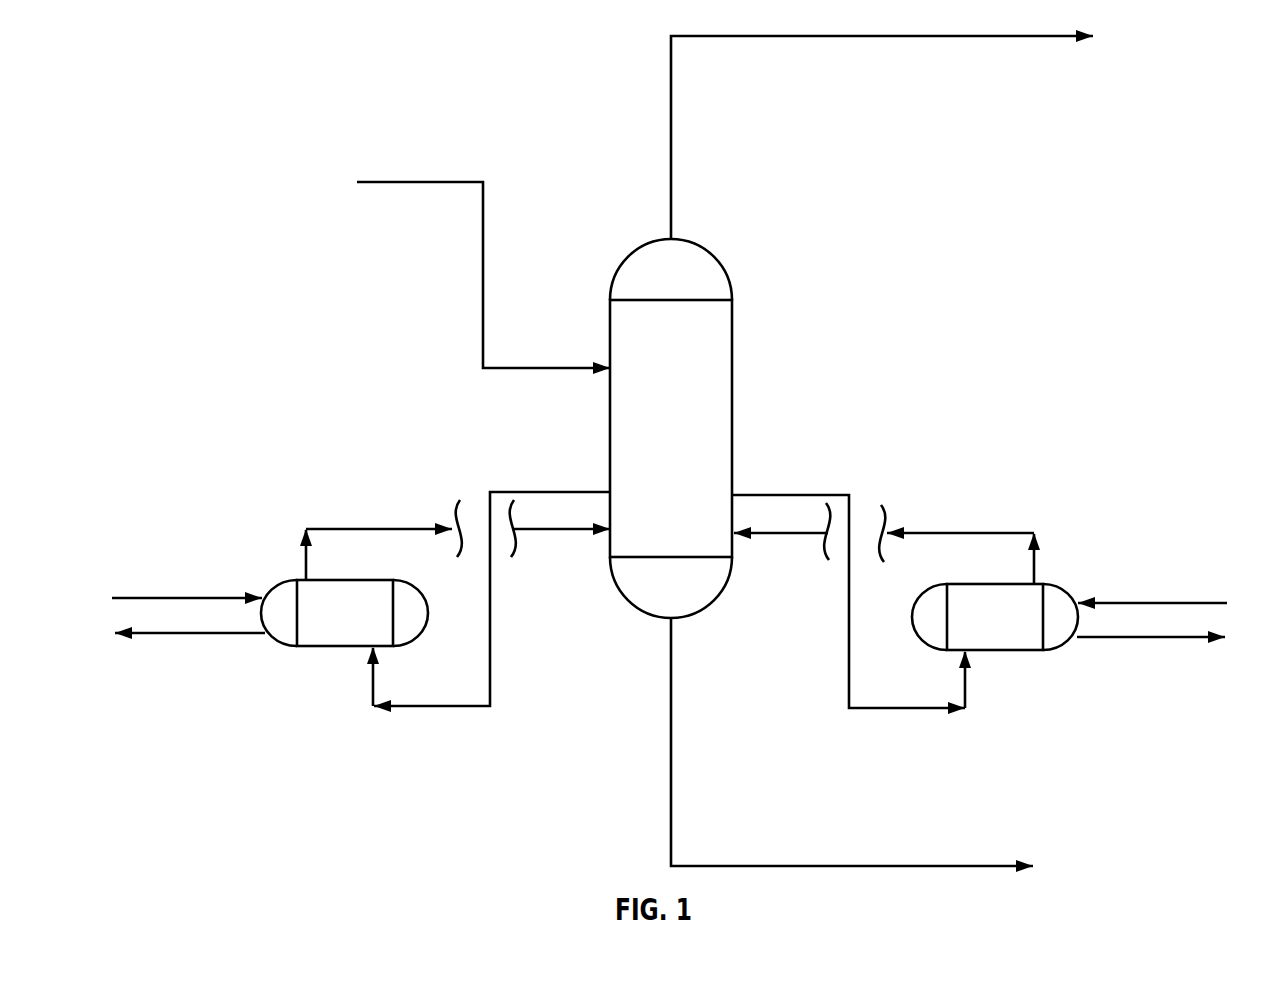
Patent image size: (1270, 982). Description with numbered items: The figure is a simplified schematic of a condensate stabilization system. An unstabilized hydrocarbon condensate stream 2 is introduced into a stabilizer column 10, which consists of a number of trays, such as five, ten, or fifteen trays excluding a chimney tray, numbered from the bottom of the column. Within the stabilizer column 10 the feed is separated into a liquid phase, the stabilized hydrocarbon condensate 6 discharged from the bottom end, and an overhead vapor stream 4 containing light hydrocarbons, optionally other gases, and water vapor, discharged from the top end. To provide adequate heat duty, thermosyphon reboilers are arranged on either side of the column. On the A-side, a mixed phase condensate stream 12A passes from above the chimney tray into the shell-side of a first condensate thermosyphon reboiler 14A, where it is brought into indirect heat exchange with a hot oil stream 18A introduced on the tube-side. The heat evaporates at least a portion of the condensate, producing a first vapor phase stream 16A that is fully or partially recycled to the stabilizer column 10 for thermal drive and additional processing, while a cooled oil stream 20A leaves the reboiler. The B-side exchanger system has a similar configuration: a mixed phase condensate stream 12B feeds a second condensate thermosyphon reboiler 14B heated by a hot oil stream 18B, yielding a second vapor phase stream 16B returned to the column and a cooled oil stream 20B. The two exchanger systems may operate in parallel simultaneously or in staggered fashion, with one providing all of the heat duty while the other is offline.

The unstabilized hydrocarbon condensate stream 2 is at (406, 182).
The overhead vapor stream 4 is at (945, 36).
The stabilized hydrocarbon condensate 6 is at (844, 866).
The stabilizer column 10 is at (614, 286).
The mixed phase condensate stream 12A is at (566, 492).
The mixed phase condensate stream 12B is at (774, 495).
The first condensate thermosyphon reboiler 14A is at (281, 585).
The second condensate thermosyphon reboiler 14B is at (1062, 590).
The first vapor phase stream 16A is at (385, 529).
The second vapor phase stream 16B is at (954, 533).
The hot oil stream 18A is at (168, 598).
The hot oil stream 18B is at (1170, 603).
The cooled oil stream 20A is at (182, 634).
The cooled oil stream 20B is at (1158, 638).